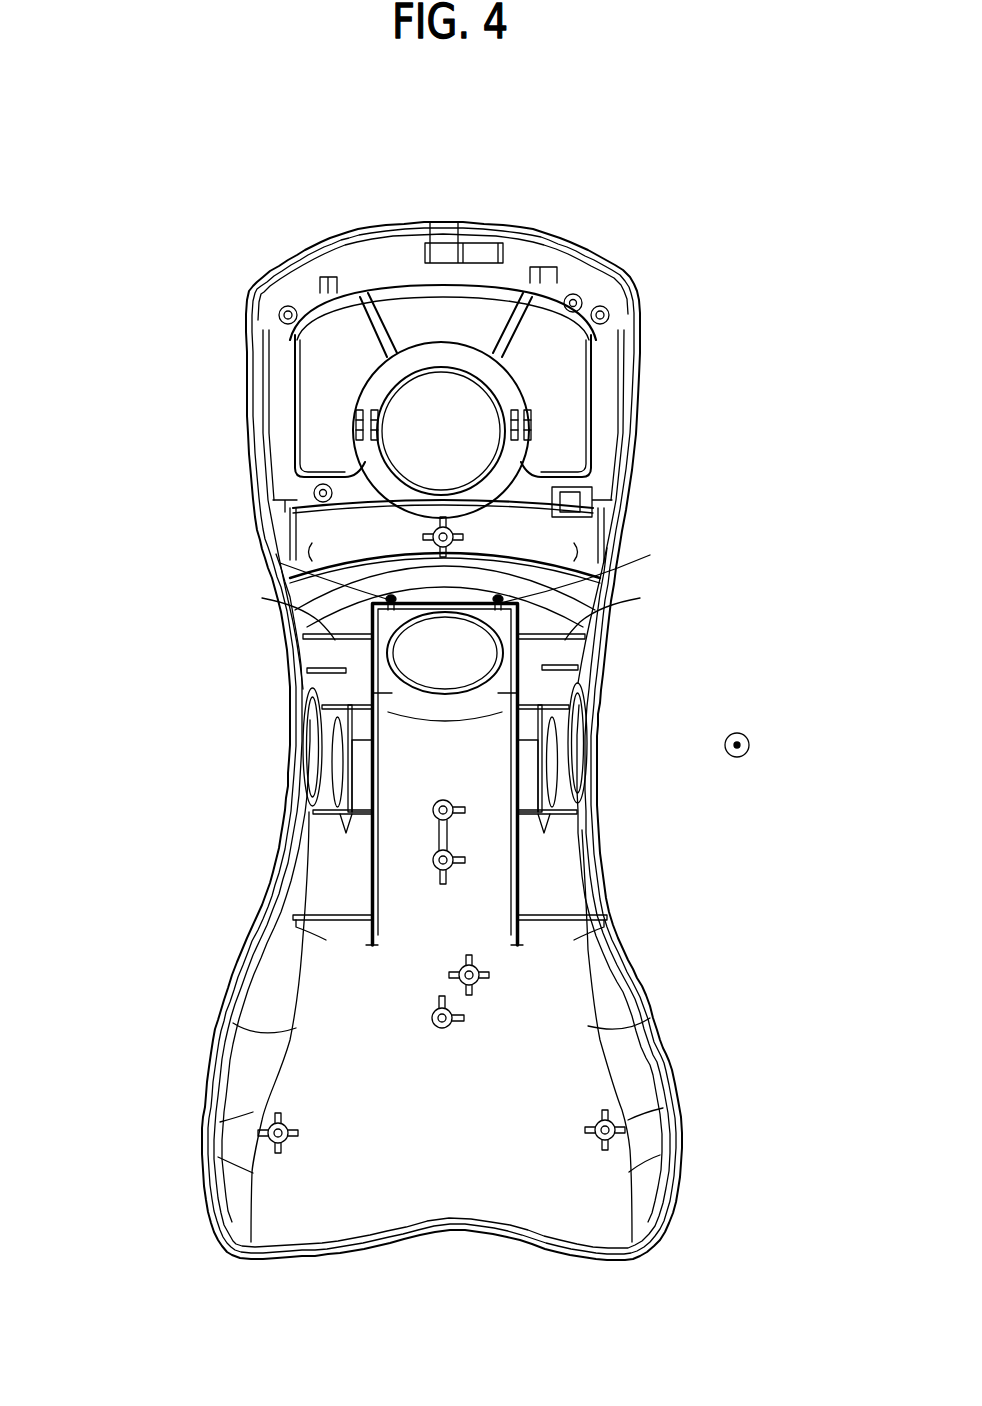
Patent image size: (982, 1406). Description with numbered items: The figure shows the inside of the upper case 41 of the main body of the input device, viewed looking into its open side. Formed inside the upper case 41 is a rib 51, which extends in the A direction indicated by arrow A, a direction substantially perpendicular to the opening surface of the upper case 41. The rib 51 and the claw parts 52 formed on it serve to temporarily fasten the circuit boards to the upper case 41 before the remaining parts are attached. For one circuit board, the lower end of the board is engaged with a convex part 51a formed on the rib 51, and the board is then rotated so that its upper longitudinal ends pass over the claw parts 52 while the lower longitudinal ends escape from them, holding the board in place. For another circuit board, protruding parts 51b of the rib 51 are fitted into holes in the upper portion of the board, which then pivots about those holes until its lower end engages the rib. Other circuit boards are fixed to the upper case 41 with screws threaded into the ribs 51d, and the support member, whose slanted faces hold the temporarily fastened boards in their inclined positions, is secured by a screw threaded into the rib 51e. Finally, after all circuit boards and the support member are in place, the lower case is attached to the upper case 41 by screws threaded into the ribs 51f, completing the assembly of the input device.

The upper case 41 is at (308, 152).
The rib 51 is at (295, 607).
The convex part 51a is at (375, 773).
The protruding parts 51b is at (386, 598).
The ribs 51d is at (578, 296).
The rib 51e is at (449, 868).
The ribs 51f is at (277, 313).
The claw parts 52 is at (338, 650).
The A direction A is at (750, 741).